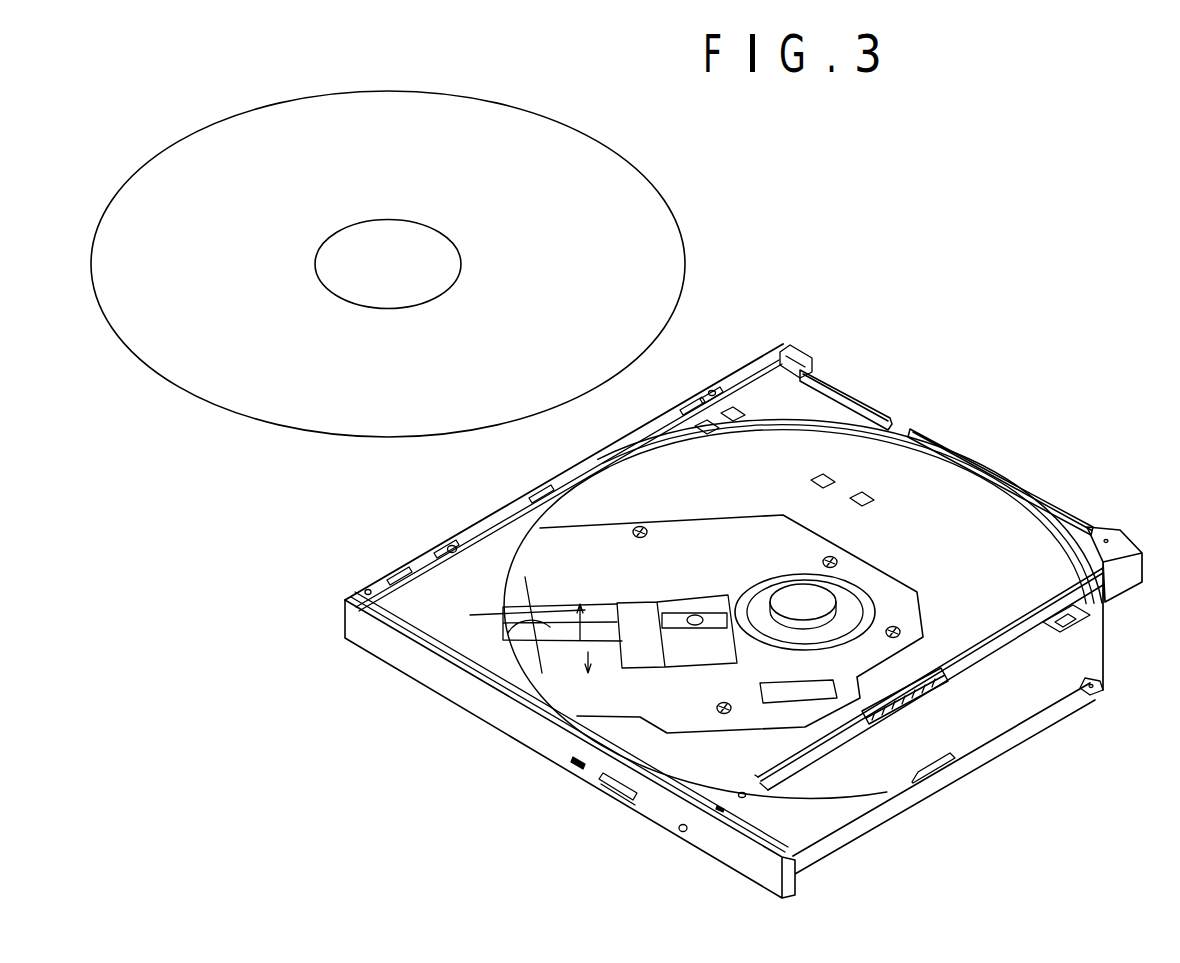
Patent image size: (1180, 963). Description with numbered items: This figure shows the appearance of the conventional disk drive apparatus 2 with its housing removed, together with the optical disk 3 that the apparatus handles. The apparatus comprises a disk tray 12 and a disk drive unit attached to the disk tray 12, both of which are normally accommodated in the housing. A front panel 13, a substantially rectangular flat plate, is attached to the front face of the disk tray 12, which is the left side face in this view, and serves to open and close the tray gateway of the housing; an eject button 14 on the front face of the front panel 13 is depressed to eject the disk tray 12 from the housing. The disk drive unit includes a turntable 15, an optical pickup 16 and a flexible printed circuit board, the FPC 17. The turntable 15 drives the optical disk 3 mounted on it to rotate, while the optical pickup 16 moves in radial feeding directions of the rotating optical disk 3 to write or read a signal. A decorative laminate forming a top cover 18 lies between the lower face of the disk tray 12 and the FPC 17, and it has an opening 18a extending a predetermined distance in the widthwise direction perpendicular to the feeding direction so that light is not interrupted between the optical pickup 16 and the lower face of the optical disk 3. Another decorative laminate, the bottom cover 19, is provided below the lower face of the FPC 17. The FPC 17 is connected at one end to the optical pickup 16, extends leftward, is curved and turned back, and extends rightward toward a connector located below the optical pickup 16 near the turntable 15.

The disk drive apparatus 2 is at (330, 530).
The optical disk 3 is at (655, 250).
The disk tray 12 is at (448, 592).
The front panel 13 is at (441, 681).
The eject button 14 is at (614, 786).
The turntable 15 is at (802, 600).
The optical pickup 16 is at (638, 617).
The flexible printed circuit board 17 is at (518, 634).
The top cover 18 is at (587, 552).
The opening 18a is at (622, 642).
The bottom cover 19 is at (582, 645).